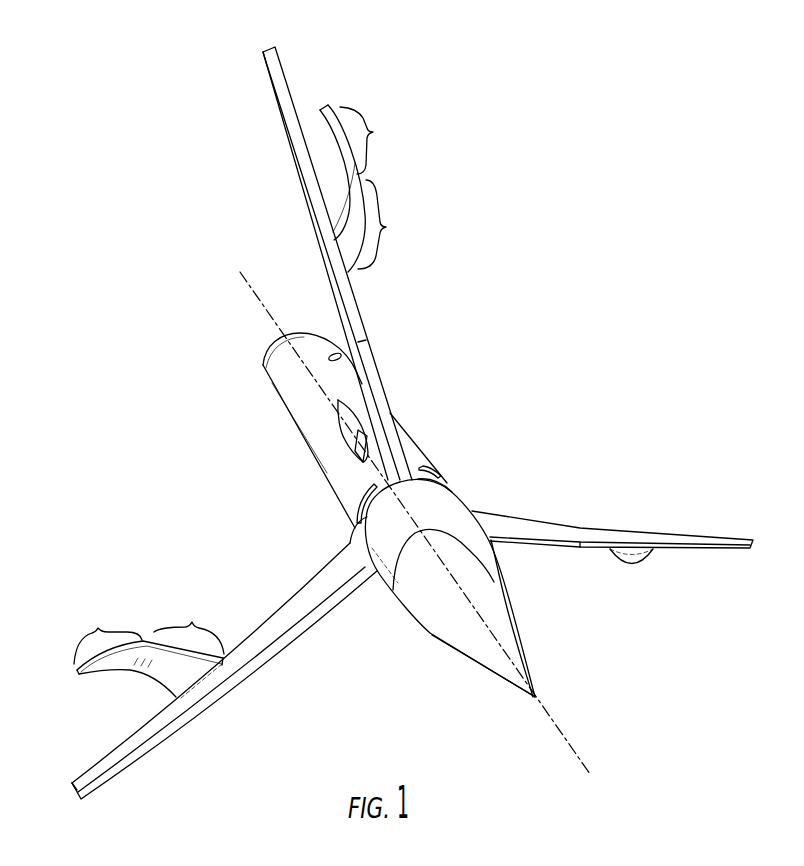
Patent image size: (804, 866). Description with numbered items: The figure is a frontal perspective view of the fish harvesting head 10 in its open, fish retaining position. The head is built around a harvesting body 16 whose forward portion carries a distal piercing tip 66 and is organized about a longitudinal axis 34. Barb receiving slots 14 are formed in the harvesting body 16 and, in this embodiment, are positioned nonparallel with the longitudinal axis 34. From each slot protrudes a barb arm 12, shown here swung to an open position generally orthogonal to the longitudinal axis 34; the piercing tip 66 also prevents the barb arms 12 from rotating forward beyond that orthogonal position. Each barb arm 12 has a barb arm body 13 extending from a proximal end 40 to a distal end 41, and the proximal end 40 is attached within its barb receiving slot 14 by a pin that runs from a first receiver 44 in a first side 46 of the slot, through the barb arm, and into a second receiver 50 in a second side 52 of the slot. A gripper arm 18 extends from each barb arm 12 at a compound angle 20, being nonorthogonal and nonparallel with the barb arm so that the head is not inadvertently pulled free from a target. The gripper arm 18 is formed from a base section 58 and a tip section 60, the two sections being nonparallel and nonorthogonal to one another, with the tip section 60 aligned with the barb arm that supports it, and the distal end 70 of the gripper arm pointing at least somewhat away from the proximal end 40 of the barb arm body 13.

The fish harvesting head 10 is at (617, 292).
The barb arm 12 is at (362, 313).
The barb arm body 13 is at (323, 217).
The barb receiving slot 14 is at (358, 448).
The harvesting body 16 is at (305, 424).
The gripper arm 18 is at (326, 136).
The compound angle 20 is at (455, 160).
The longitudinal axis 34 is at (567, 742).
The proximal end 40 is at (410, 473).
The distal end 41 is at (266, 47).
The first receiver 44 is at (352, 520).
The first side 46 is at (365, 485).
The second receiver 50 is at (435, 477).
The second side 52 is at (420, 473).
The base section 58 is at (284, 417).
The tip section 60 is at (234, 385).
The distal piercing tip 66 is at (503, 672).
The distal end of the gripper arm 70 is at (320, 113).